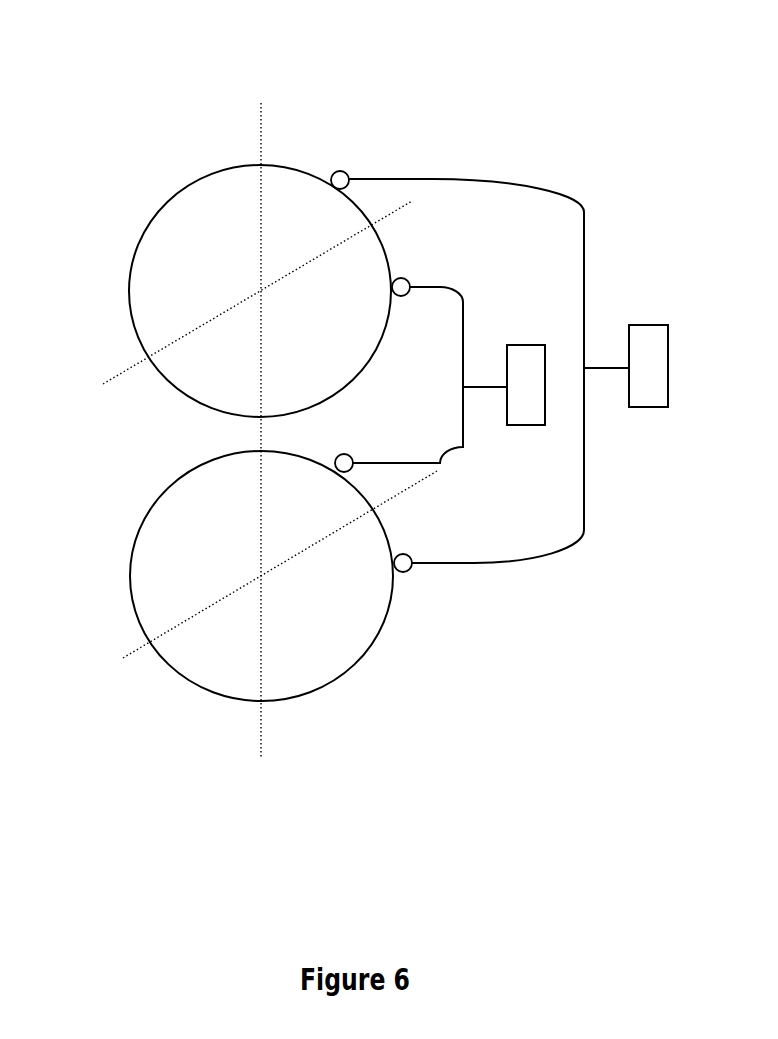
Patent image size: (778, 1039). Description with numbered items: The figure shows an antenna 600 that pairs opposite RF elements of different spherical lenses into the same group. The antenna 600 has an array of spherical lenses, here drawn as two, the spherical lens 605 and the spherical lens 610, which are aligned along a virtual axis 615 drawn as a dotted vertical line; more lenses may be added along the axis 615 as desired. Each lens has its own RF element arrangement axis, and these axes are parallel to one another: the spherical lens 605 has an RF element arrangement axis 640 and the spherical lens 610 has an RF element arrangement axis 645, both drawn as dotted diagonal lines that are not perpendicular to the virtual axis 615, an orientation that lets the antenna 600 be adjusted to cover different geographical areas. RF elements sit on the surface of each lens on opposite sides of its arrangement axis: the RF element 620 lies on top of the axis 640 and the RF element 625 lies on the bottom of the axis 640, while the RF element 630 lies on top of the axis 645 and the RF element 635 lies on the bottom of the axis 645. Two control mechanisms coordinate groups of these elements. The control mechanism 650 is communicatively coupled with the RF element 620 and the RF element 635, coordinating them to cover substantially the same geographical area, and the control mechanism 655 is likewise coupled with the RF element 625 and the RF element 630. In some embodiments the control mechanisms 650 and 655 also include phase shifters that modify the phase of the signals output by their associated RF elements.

The antenna 600 is at (110, 62).
The spherical lens 605 is at (156, 212).
The spherical lens 610 is at (133, 545).
The axis 615 is at (261, 117).
The RF element 620 is at (342, 166).
The RF element 625 is at (404, 278).
The RF element 630 is at (349, 453).
The RF element 635 is at (408, 554).
The RF element arrangement axis 640 is at (117, 373).
The RF element arrangement axis 645 is at (128, 653).
The control mechanism 650 is at (640, 324).
The control mechanism 655 is at (520, 344).